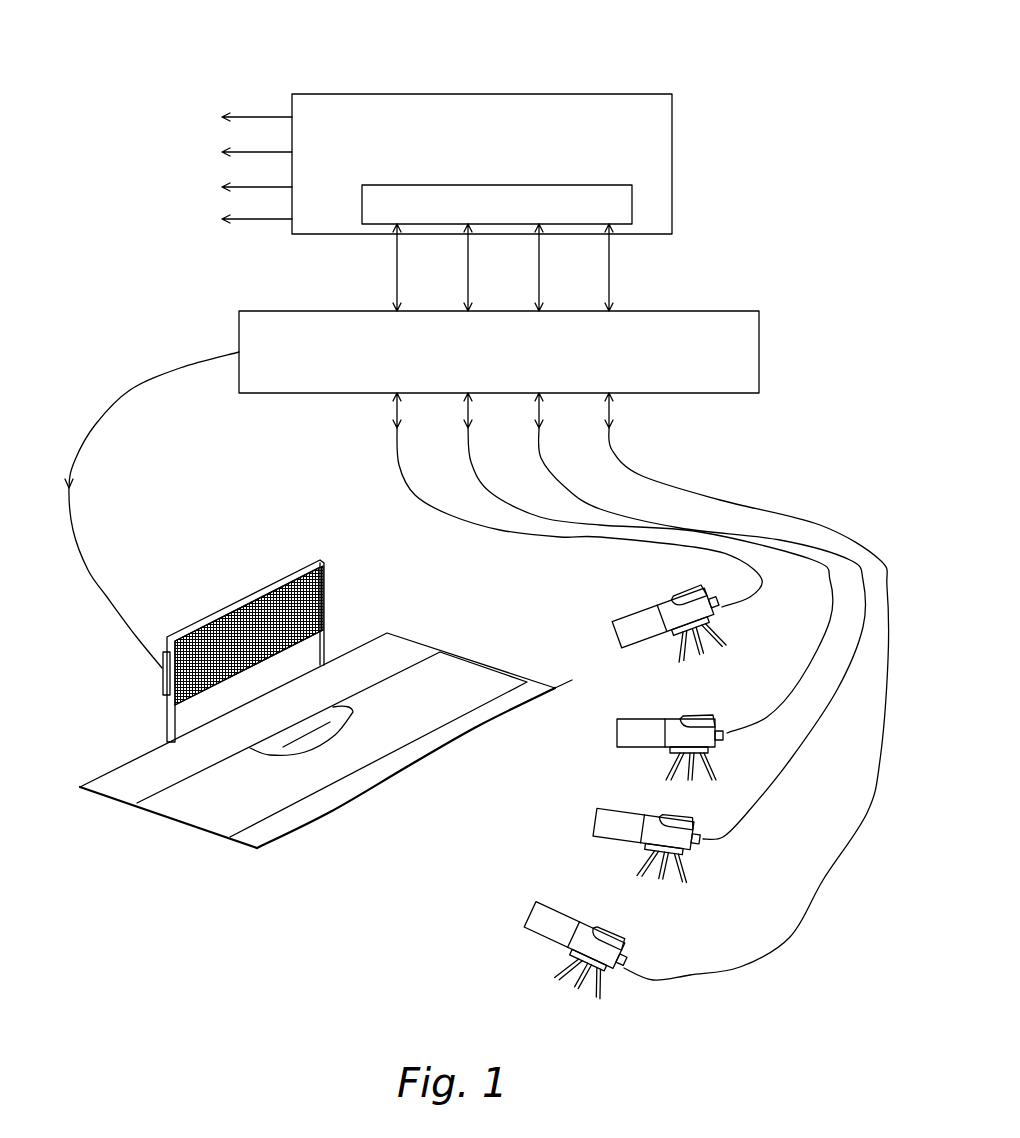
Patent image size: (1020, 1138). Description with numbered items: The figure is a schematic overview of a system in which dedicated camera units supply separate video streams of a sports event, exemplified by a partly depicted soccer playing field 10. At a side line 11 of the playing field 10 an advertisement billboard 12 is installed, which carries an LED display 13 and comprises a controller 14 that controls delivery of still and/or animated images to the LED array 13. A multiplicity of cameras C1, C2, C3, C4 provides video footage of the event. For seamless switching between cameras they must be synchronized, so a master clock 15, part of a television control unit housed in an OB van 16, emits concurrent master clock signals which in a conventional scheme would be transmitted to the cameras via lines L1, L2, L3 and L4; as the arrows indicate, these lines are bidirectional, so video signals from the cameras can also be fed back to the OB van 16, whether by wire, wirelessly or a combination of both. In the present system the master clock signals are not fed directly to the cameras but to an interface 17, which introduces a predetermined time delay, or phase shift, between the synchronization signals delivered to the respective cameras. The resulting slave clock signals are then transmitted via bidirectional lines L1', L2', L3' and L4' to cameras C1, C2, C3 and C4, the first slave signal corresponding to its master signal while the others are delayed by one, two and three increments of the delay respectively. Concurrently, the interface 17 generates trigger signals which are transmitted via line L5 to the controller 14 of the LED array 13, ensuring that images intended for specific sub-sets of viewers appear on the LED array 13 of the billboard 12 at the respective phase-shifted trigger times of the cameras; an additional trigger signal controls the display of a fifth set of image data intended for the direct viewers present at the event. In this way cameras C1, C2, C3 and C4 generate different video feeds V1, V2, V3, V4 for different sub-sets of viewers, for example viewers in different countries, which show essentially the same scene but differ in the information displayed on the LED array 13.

The soccer playing field 10 is at (129, 871).
The side line 11 is at (130, 768).
The advertisement billboard 12 is at (242, 606).
The LED display 13 is at (310, 607).
The controller 14 is at (160, 691).
The master clock 15 is at (615, 200).
The OB van 16 is at (447, 110).
The interface 17 is at (723, 345).
The camera C1 is at (635, 620).
The camera C2 is at (652, 730).
The camera C3 is at (617, 820).
The camera C4 is at (582, 918).
The line L1 is at (369, 267).
The line L2 is at (443, 267).
The line L3 is at (515, 267).
The line L4 is at (585, 267).
The bidirectional line L1' is at (550, 500).
The bidirectional line L2' is at (621, 563).
The bidirectional line L3' is at (675, 616).
The bidirectional line L4' is at (722, 686).
The line L5 is at (107, 412).
The video feed V1 is at (235, 116).
The video feed V2 is at (235, 151).
The video feed V3 is at (235, 186).
The video feed V4 is at (235, 220).